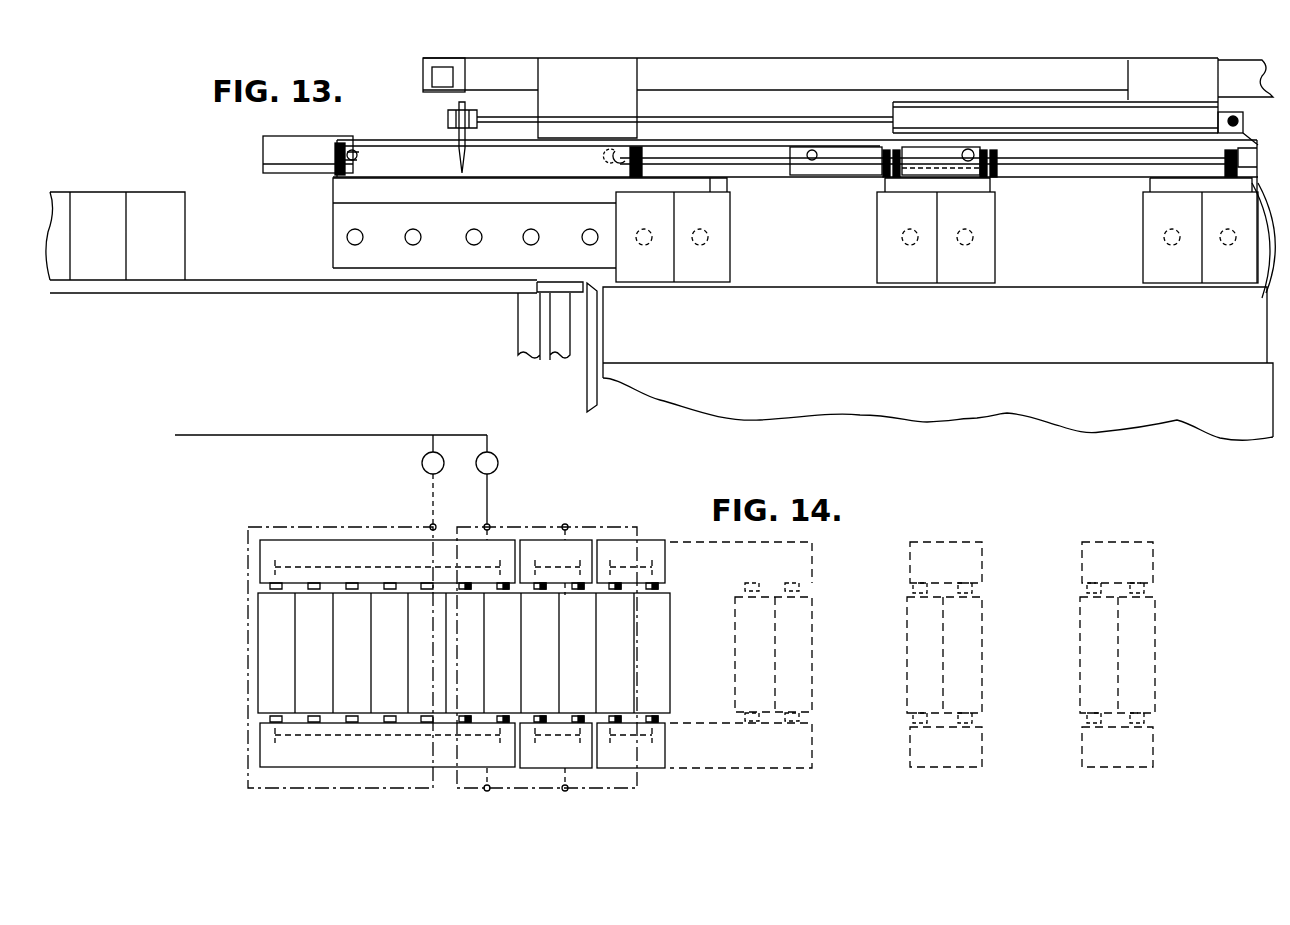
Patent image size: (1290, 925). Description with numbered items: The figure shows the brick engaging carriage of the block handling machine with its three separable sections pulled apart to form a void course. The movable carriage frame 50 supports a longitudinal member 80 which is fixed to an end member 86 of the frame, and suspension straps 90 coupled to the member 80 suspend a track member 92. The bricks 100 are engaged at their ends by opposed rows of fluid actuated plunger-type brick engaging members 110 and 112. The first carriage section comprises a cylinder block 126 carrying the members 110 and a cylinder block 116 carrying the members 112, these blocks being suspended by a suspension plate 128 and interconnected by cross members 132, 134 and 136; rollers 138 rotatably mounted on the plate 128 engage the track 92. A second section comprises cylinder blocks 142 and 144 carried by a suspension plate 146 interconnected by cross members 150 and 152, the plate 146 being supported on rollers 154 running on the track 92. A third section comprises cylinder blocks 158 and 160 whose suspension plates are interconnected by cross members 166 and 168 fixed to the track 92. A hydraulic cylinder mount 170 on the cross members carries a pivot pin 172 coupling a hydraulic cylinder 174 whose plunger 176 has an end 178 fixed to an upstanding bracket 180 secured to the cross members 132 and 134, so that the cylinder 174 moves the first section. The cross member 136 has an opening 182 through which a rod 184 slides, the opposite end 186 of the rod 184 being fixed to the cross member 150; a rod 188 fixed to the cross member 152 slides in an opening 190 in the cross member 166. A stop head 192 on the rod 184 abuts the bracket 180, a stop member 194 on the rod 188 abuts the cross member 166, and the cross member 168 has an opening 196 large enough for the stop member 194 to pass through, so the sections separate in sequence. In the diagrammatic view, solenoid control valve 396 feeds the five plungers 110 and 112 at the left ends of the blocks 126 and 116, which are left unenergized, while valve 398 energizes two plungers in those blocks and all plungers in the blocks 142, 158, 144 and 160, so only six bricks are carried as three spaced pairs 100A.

In FIG. 13, the movable carriage frame 50 is at (609, 50).
In FIG. 13, the longitudinal member 80 is at (694, 58).
In FIG. 13, the end member 86 is at (426, 88).
In FIG. 13, the suspension straps 90 is at (1138, 72).
In FIG. 13, the track member 92 is at (273, 148).
In FIG. 13, the bricks 100 is at (152, 202).
In FIG. 14, the bricks 100 is at (590, 618).
In FIG. 13, the pairs of bricks 100A is at (1213, 265).
In FIG. 14, the pairs of bricks 100A is at (1110, 668).
In FIG. 13, the brick engaging members 110 is at (965, 244).
In FIG. 14, the brick engaging members 110 is at (503, 593).
In FIG. 14, the brick engaging members 112 is at (577, 716).
In FIG. 14, the cylinder block 116 is at (393, 766).
In FIG. 13, the cylinder block 126 is at (437, 257).
In FIG. 14, the cylinder block 126 is at (817, 566).
In FIG. 13, the suspension plate 128 is at (402, 195).
In FIG. 13, the cross member 132 is at (335, 173).
In FIG. 13, the cross member 134 is at (465, 160).
In FIG. 13, the cross member 136 is at (702, 160).
In FIG. 13, the rollers 138 is at (630, 142).
In FIG. 14, the cylinder block 142 is at (925, 542).
In FIG. 14, the cylinder block 144 is at (967, 767).
In FIG. 13, the suspension plate 146 is at (870, 145).
In FIG. 13, the cross member 150 is at (883, 175).
In FIG. 13, the cross member 152 is at (990, 175).
In FIG. 13, the rollers 154 is at (970, 140).
In FIG. 14, the cylinder block 158 is at (1130, 540).
In FIG. 14, the cylinder block 160 is at (1120, 767).
In FIG. 13, the cross member 166 is at (1230, 230).
In FIG. 13, the cross member 168 is at (1263, 222).
In FIG. 13, the hydraulic cylinder mount 170 is at (1215, 112).
In FIG. 13, the pivot pin 172 is at (1234, 92).
In FIG. 13, the hydraulic cylinder 174 is at (1138, 122).
In FIG. 13, the plunger 176 is at (778, 123).
In FIG. 13, the end of plunger 178 is at (455, 110).
In FIG. 13, the upstanding bracket 180 is at (455, 143).
In FIG. 13, the opening 182 is at (635, 177).
In FIG. 13, the rod 184 is at (707, 164).
In FIG. 13, the end of rod 186 is at (910, 167).
In FIG. 13, the rod 188 is at (1125, 167).
In FIG. 13, the opening 190 is at (1225, 158).
In FIG. 13, the stop head 192 is at (615, 162).
In FIG. 13, the stop member 194 is at (1227, 177).
In FIG. 13, the opening 196 is at (1230, 290).
In FIG. 14, the solenoid control valve 396 is at (420, 460).
In FIG. 14, the solenoid control valve 398 is at (498, 461).